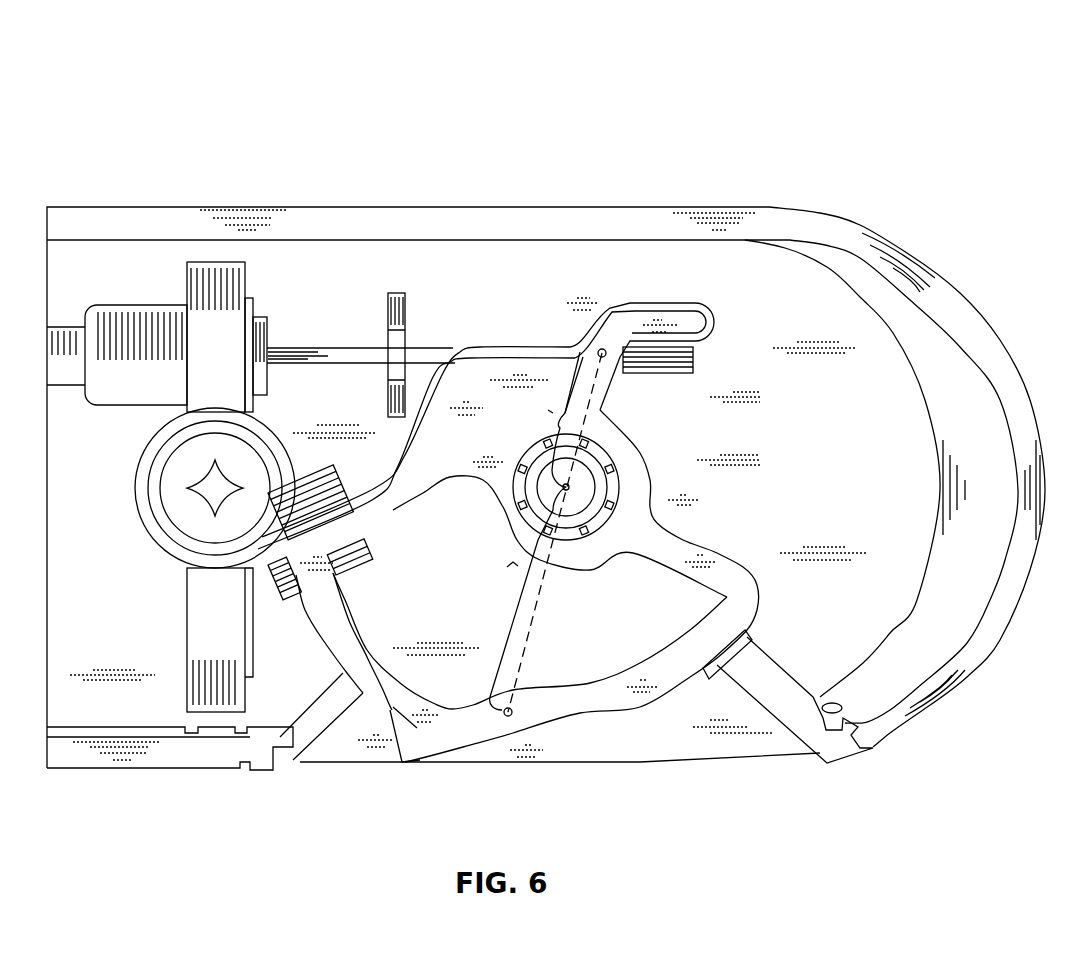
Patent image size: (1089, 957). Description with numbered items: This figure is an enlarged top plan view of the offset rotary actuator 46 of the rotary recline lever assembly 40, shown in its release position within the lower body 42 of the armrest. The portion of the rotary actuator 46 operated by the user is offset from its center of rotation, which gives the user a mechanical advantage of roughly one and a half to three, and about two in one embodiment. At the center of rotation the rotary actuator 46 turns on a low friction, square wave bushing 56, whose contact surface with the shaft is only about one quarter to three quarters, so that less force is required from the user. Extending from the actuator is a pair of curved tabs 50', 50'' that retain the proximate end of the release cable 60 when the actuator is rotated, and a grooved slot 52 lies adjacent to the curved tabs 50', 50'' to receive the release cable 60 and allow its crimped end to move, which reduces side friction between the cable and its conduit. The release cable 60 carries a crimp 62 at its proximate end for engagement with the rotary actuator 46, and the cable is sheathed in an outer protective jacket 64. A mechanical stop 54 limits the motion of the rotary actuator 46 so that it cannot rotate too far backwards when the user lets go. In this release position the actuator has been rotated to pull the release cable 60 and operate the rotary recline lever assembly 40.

The rotary recline lever assembly 40 is at (886, 135).
The lower body 42 is at (960, 293).
The rotary actuator 46 is at (463, 601).
The curved tab 50' is at (648, 260).
The curved tab 50'' is at (699, 268).
The grooved slot 52 is at (483, 377).
The mechanical stop 54 is at (250, 542).
The square wave bushing 56 is at (613, 505).
The release cable 60 is at (328, 357).
The crimp 62 is at (690, 363).
The outer protective jacket 64 is at (135, 318).